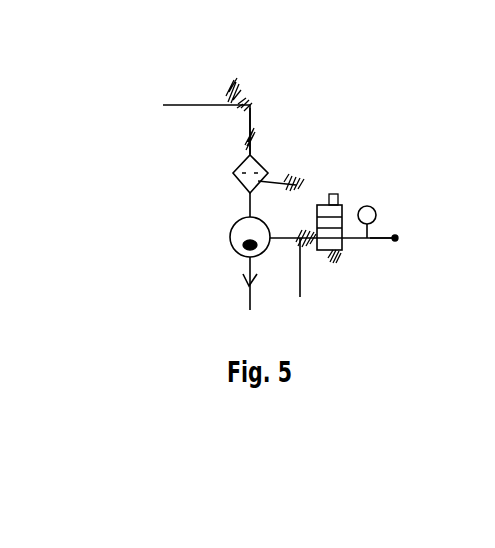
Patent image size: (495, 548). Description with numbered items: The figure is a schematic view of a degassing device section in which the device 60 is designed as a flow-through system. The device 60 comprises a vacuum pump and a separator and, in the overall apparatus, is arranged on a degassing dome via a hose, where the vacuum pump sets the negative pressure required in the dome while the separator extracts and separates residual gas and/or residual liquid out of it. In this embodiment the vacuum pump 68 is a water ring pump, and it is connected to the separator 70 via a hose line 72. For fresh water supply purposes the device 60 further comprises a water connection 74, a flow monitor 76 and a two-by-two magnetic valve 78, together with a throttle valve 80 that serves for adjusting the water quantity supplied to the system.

The device 60 is at (133, 272).
The vacuum pump 68 is at (242, 256).
The separator 70 is at (260, 164).
The hose line 72 is at (251, 126).
The water connection 74 is at (398, 237).
The flow monitor 76 is at (372, 207).
The 2/2 magnetic valve 78 is at (340, 250).
The throttle valve 80 is at (304, 287).